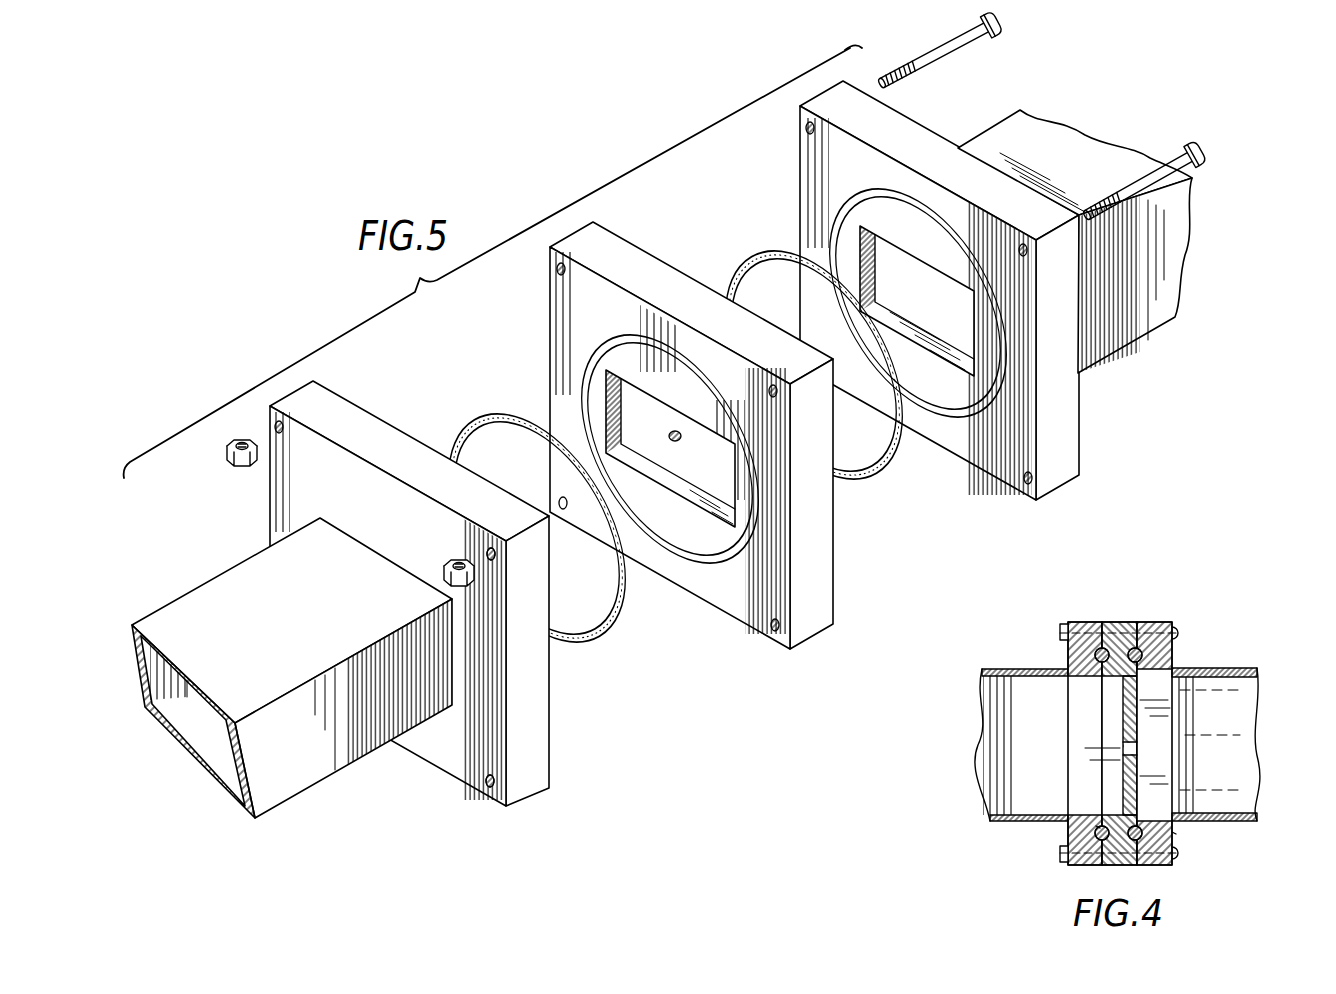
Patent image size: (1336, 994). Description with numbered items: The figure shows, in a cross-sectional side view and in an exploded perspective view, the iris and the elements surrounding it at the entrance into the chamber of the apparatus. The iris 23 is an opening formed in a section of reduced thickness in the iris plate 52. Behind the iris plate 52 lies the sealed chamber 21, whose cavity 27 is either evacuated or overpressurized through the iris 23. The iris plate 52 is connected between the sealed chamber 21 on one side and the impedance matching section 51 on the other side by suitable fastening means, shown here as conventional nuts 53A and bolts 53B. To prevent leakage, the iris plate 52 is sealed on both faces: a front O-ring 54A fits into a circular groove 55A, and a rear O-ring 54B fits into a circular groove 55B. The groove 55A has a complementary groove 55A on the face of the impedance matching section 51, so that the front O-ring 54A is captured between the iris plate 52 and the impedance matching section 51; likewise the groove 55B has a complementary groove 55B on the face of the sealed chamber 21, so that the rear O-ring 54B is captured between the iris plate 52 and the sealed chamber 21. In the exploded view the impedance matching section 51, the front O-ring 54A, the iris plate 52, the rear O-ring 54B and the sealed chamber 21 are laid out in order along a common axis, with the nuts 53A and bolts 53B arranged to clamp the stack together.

In FIG. 5, the sealed chamber 21 is at (1168, 285).
In FIG. 4, the sealed chamber 21 is at (1240, 668).
In FIG. 5, the iris 23 is at (680, 442).
In FIG. 4, the iris 23 is at (1125, 752).
In FIG. 5, the cavity 27 is at (875, 262).
In FIG. 4, the cavity 27 is at (1240, 705).
In FIG. 5, the impedance matching section 51 is at (334, 734).
In FIG. 4, the impedance matching section 51 is at (995, 668).
In FIG. 5, the iris plate 52 is at (818, 598).
In FIG. 4, the iris plate 52 is at (1118, 623).
In FIG. 5, the nuts 53A is at (228, 468).
In FIG. 4, the nuts 53A is at (1062, 620).
In FIG. 5, the bolts 53B is at (960, 44).
In FIG. 4, the bolts 53B is at (1180, 630).
In FIG. 5, the front O-ring 54A is at (586, 644).
In FIG. 4, the front O-ring 54A is at (1095, 825).
In FIG. 5, the rear O-ring 54B is at (855, 480).
In FIG. 4, the rear O-ring 54B is at (1178, 835).
In FIG. 5, the circular groove 55A is at (677, 556).
In FIG. 4, the circular groove 55A is at (1103, 650).
In FIG. 5, the circular groove 55B is at (945, 415).
In FIG. 4, the circular groove 55B is at (1138, 653).